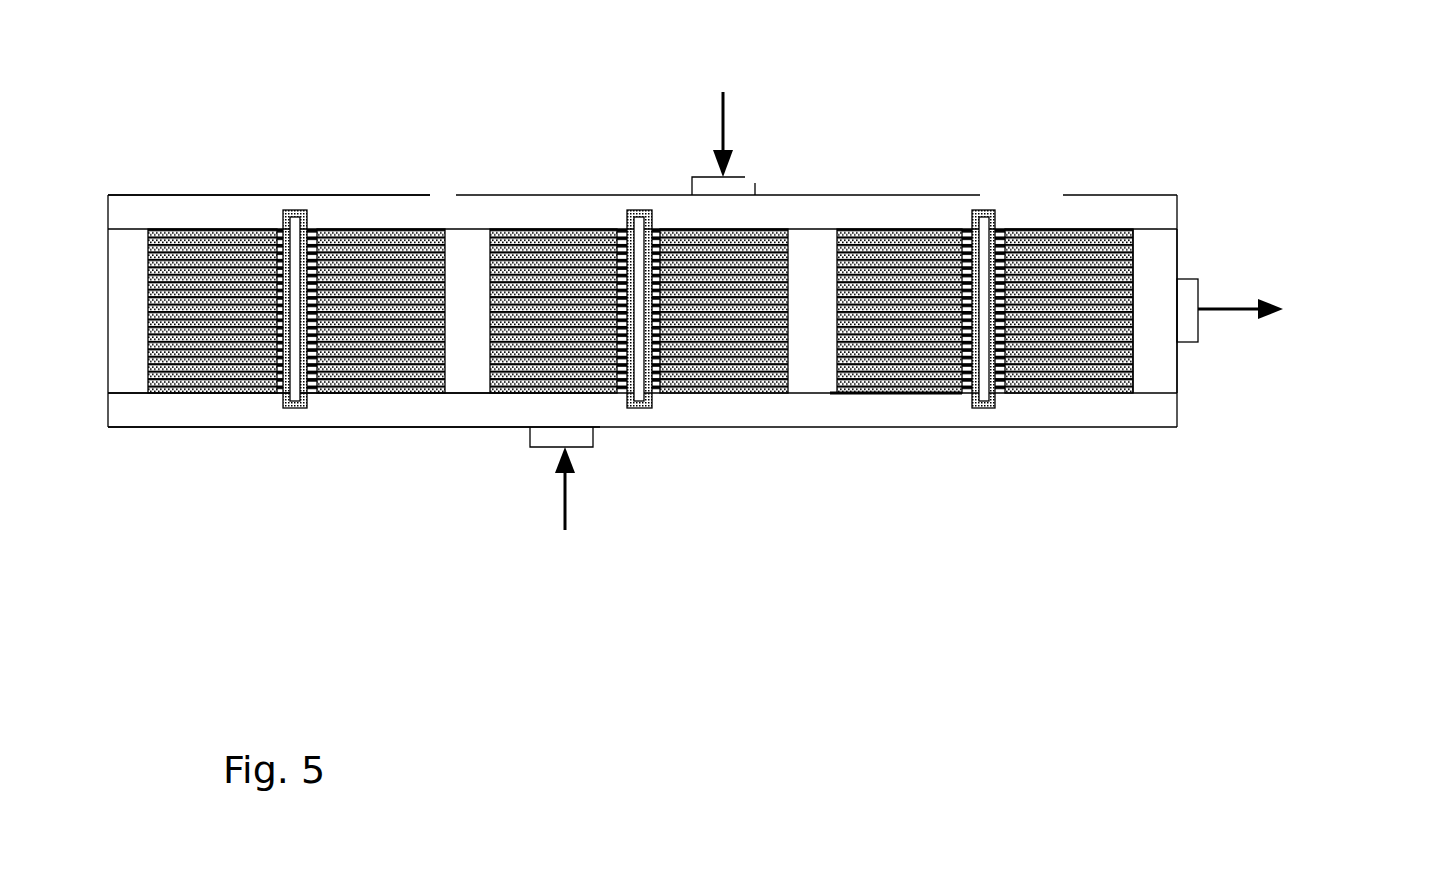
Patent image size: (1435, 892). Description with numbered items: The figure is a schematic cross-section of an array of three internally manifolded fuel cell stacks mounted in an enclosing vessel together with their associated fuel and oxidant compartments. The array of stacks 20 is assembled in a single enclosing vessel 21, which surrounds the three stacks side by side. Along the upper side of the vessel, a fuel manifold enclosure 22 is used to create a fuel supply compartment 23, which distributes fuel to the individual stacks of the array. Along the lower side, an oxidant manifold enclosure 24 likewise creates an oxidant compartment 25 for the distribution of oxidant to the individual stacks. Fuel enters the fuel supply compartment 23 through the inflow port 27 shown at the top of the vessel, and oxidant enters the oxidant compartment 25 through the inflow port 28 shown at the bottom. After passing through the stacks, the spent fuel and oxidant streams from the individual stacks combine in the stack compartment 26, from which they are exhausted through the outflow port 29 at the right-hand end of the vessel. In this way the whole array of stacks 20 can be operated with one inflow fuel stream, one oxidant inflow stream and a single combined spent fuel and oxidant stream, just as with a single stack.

The array of stacks 20 is at (593, 342).
The enclosing vessel 21 is at (642, 283).
The fuel manifold enclosure 22 is at (269, 167).
The fuel supply compartment 23 is at (636, 283).
The oxidant manifold enclosure 24 is at (354, 458).
The oxidant compartment 25 is at (354, 434).
The stack compartment 26 is at (1133, 348).
The inflow port 27 is at (730, 136).
The inflow port 28 is at (539, 484).
The outflow port 29 is at (1294, 330).